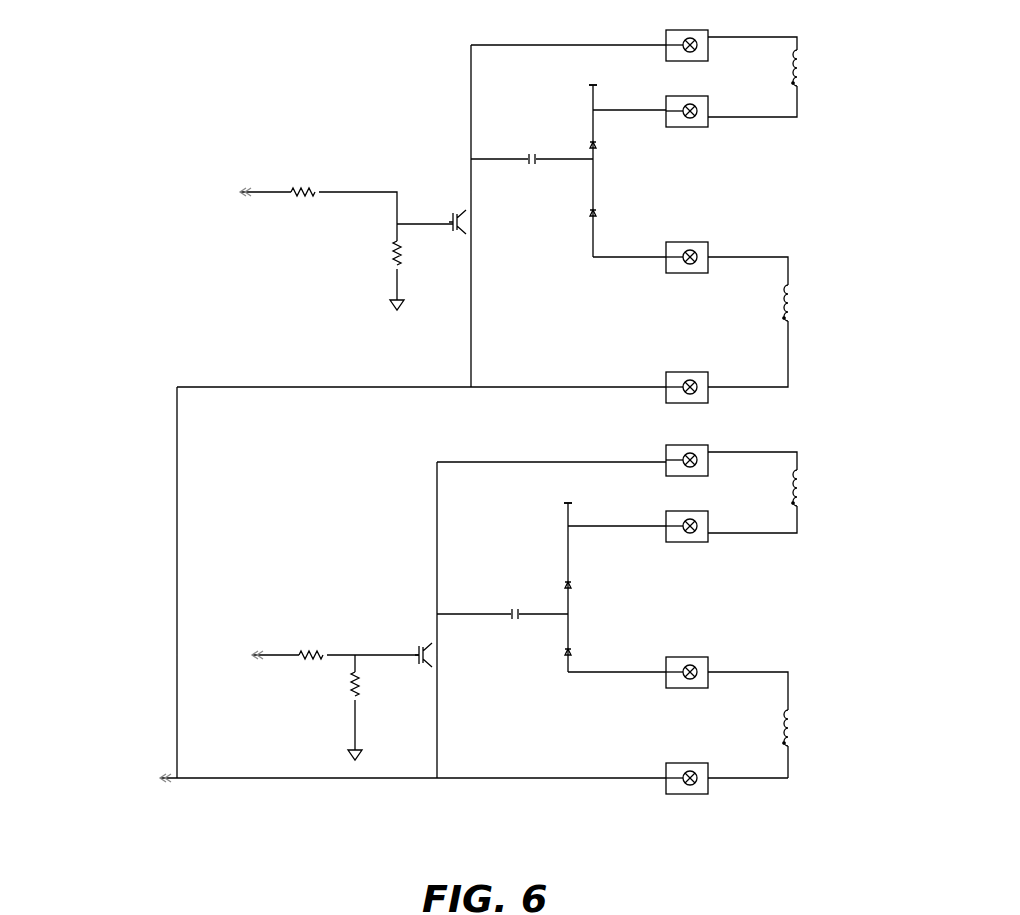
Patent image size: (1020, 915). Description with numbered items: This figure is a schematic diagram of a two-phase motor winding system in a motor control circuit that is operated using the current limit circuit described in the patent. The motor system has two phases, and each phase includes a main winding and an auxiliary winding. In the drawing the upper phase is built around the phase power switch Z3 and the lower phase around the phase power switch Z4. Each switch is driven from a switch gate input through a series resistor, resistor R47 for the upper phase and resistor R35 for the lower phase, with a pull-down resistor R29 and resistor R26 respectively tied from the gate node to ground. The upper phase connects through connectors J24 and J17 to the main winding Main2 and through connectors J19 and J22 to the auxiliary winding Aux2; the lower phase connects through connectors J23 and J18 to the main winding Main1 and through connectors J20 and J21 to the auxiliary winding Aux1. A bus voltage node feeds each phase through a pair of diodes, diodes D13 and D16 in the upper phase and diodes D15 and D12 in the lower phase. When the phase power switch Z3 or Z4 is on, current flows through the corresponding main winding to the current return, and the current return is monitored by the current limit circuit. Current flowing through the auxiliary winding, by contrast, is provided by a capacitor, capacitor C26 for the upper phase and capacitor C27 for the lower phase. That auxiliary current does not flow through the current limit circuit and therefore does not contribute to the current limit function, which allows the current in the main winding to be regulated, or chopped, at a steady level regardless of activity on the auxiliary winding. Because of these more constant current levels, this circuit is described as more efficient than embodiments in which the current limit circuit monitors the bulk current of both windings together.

The resistor 10 ohm R47 is at (306, 193).
The resistor 20k ohm R29 is at (413, 271).
The phase power switch Z3 is at (447, 213).
The capacitor C26 is at (528, 160).
The diode D13 is at (615, 147).
The diode D16 is at (615, 215).
The connector J24 is at (687, 36).
The connector J17 is at (687, 101).
The connector J19 is at (687, 247).
The connector J22 is at (687, 377).
The main winding 2 Main2 is at (823, 68).
The auxiliary winding 2 Aux2 is at (810, 303).
The resistor 10 ohm R35 is at (313, 655).
The resistor 20k ohm R26 is at (372, 716).
The phase power switch Z4 is at (413, 642).
The capacitor C27 is at (515, 615).
The diode D15 is at (588, 585).
The diode D12 is at (588, 652).
The connector J23 is at (687, 450).
The connector J18 is at (687, 515).
The connector J20 is at (687, 662).
The connector J21 is at (687, 768).
The main winding 1 Main1 is at (823, 488).
The auxiliary winding 1 Aux1 is at (810, 726).